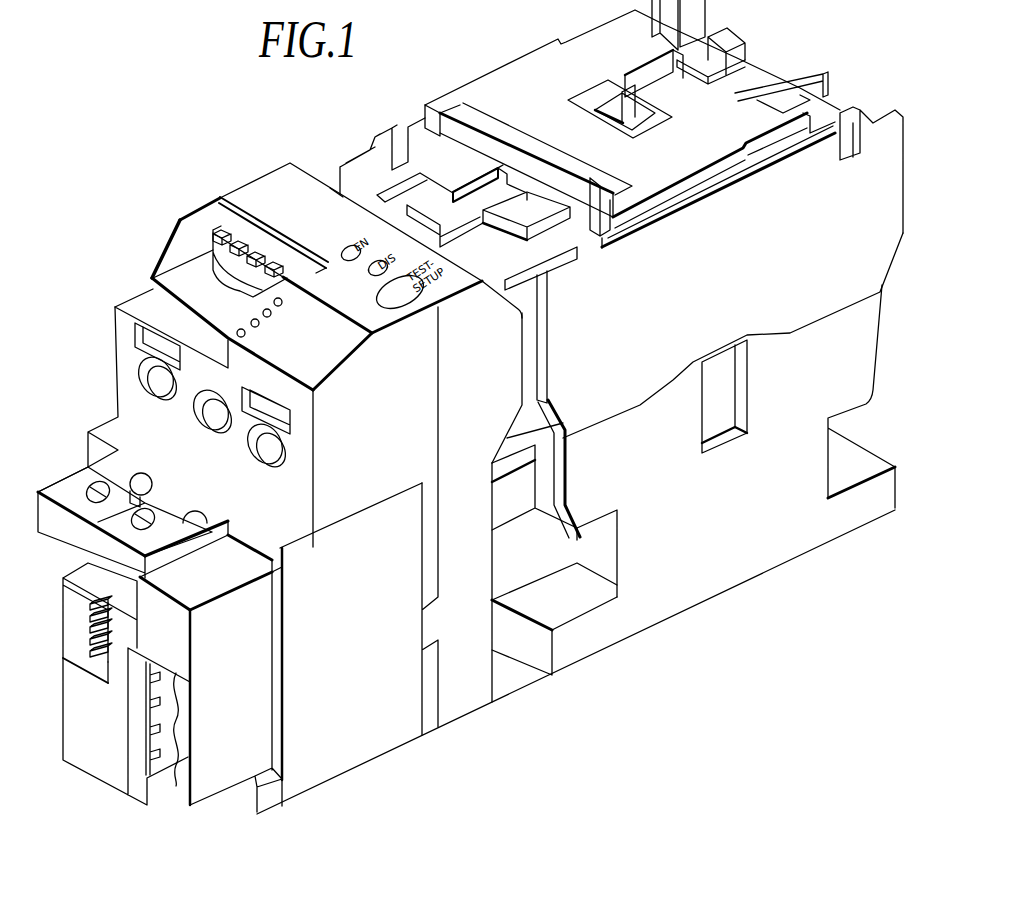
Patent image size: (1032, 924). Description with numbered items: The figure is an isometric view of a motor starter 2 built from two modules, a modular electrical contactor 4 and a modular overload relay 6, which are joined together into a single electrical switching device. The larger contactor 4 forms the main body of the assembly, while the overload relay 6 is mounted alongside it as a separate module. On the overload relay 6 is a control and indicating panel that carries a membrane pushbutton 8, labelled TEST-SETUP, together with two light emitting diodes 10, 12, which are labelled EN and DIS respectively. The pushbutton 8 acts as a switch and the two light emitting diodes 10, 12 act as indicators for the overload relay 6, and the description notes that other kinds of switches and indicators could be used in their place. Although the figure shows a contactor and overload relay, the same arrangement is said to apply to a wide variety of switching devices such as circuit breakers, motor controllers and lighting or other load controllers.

The motor starter 2 is at (663, 726).
The modular electrical contactor 4 is at (758, 563).
The modular overload relay 6 is at (458, 708).
The membrane pushbutton 8 is at (392, 304).
The light emitting diode 10 is at (343, 257).
The light emitting diode 12 is at (373, 273).